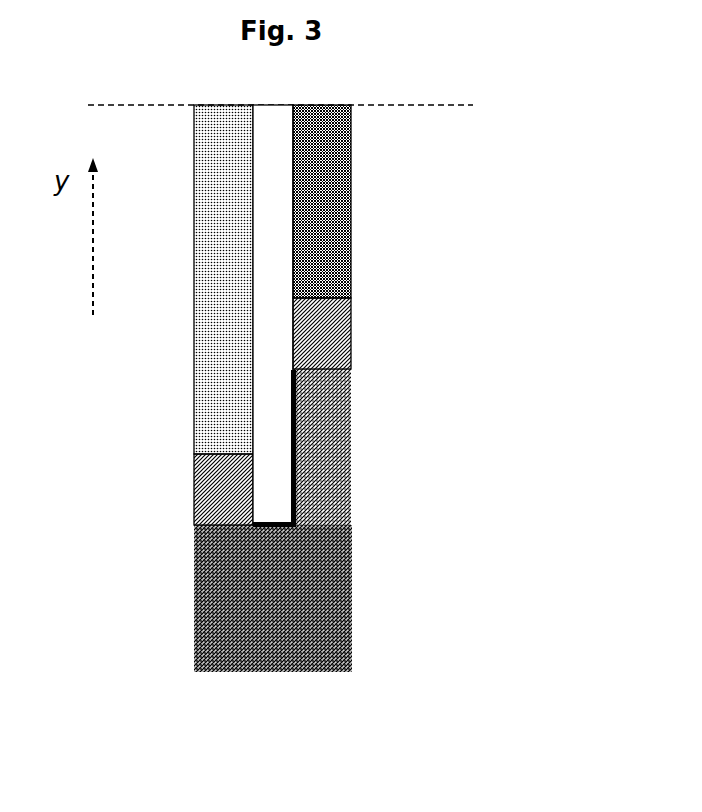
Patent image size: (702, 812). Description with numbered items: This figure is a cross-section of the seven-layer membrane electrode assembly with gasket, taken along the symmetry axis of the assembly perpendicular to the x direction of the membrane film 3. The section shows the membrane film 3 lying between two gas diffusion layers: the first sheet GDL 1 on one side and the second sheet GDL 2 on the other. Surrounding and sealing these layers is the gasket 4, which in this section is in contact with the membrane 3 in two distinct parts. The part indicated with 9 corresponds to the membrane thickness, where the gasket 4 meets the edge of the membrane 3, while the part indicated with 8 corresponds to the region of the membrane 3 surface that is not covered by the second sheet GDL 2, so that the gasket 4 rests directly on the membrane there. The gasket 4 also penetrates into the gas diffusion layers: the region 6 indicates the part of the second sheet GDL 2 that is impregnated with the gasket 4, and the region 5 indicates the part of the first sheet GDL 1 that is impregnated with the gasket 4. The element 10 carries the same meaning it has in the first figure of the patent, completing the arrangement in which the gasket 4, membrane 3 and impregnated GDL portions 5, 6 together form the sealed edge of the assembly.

The first sheet GDL 1 is at (213, 347).
The second sheet GDL 2 is at (333, 128).
The membrane film 3 is at (271, 227).
The gasket 4 is at (292, 636).
The part of first sheet GDL impregnated with gasket 5 is at (213, 492).
The part of second sheet GDL impregnated with gasket 6 is at (333, 323).
The part of gasket in contact with membrane surface 8 is at (300, 453).
The part of gasket in contact with membrane thickness 9 is at (278, 529).
The element with same meaning as in the first figure 10 is at (340, 418).